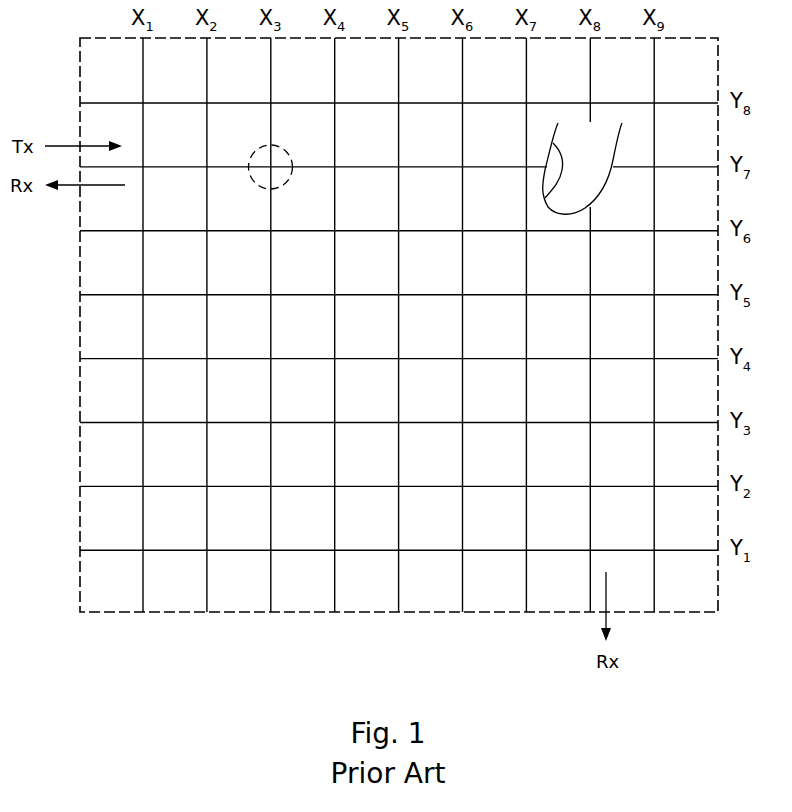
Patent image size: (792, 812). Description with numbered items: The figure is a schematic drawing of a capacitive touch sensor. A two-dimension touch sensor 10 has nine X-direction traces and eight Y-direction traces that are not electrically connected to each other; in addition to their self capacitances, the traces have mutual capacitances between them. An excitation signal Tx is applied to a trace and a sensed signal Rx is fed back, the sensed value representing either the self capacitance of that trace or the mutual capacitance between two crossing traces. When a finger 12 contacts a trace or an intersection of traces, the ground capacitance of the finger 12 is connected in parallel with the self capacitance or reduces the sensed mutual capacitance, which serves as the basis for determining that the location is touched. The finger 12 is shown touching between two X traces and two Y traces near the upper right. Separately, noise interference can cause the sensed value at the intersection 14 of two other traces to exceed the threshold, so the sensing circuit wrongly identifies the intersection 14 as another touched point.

The two-dimension touch sensor 10 is at (80, 326).
The finger 12 is at (607, 185).
The intersection 14 is at (287, 178).